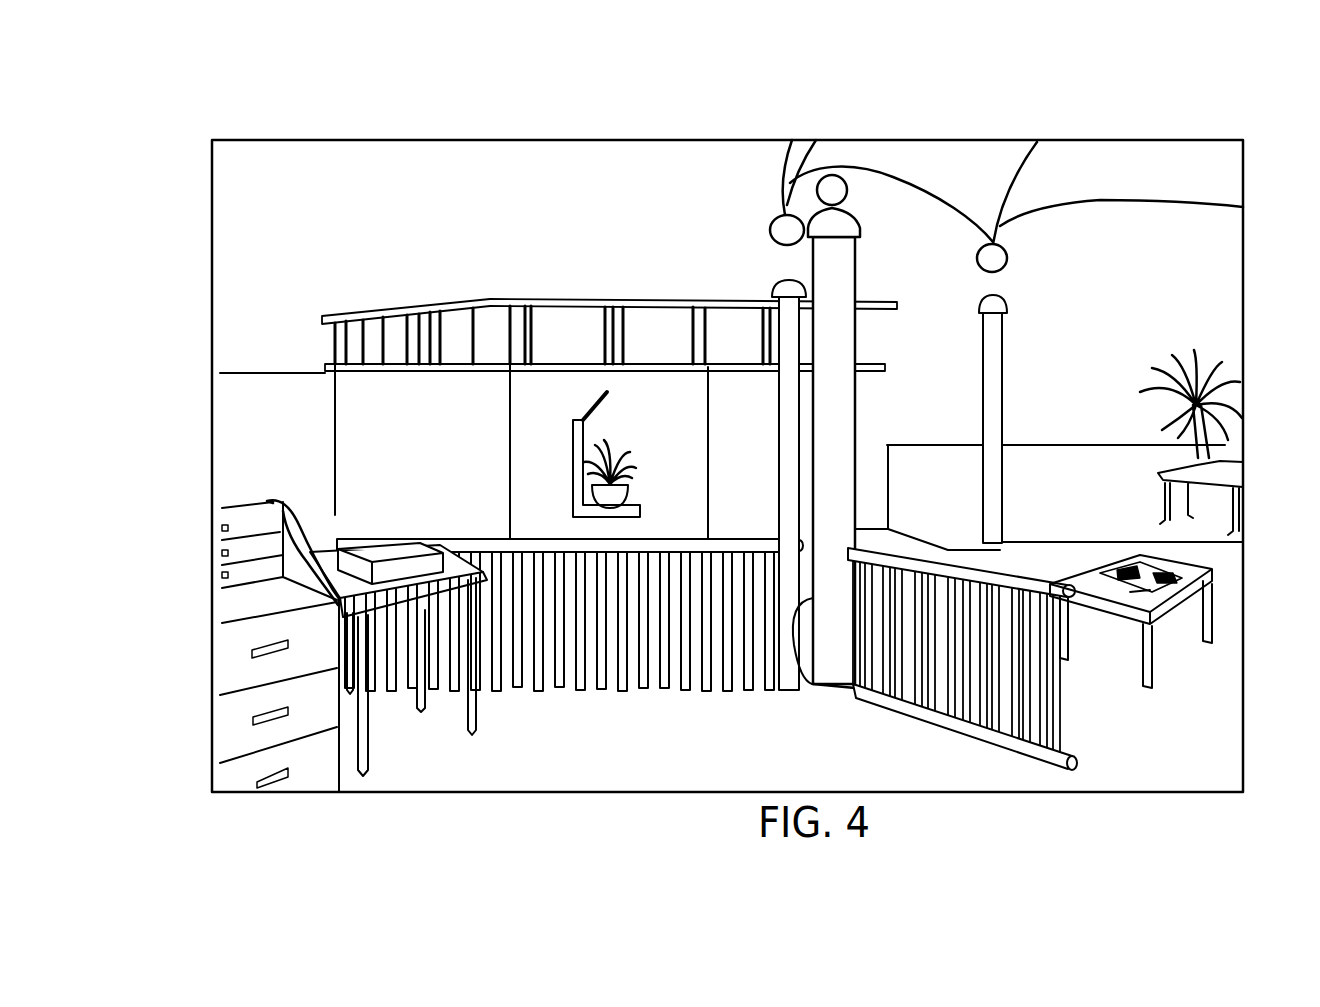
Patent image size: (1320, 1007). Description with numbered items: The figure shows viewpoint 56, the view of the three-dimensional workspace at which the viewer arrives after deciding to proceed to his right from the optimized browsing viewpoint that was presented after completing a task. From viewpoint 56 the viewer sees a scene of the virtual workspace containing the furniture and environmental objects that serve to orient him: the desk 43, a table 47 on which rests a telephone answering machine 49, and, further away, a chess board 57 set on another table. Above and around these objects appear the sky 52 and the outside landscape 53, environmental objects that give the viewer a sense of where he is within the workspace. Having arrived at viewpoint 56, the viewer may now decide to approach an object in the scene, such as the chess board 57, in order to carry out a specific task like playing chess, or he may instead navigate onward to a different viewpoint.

The desk 43 is at (258, 528).
The table 47 is at (270, 502).
The telephone answering machine 49 is at (478, 728).
The sky 52 is at (562, 215).
The outside landscape 53 is at (270, 425).
The viewpoint 56 is at (669, 792).
The chess board 57 is at (1207, 570).